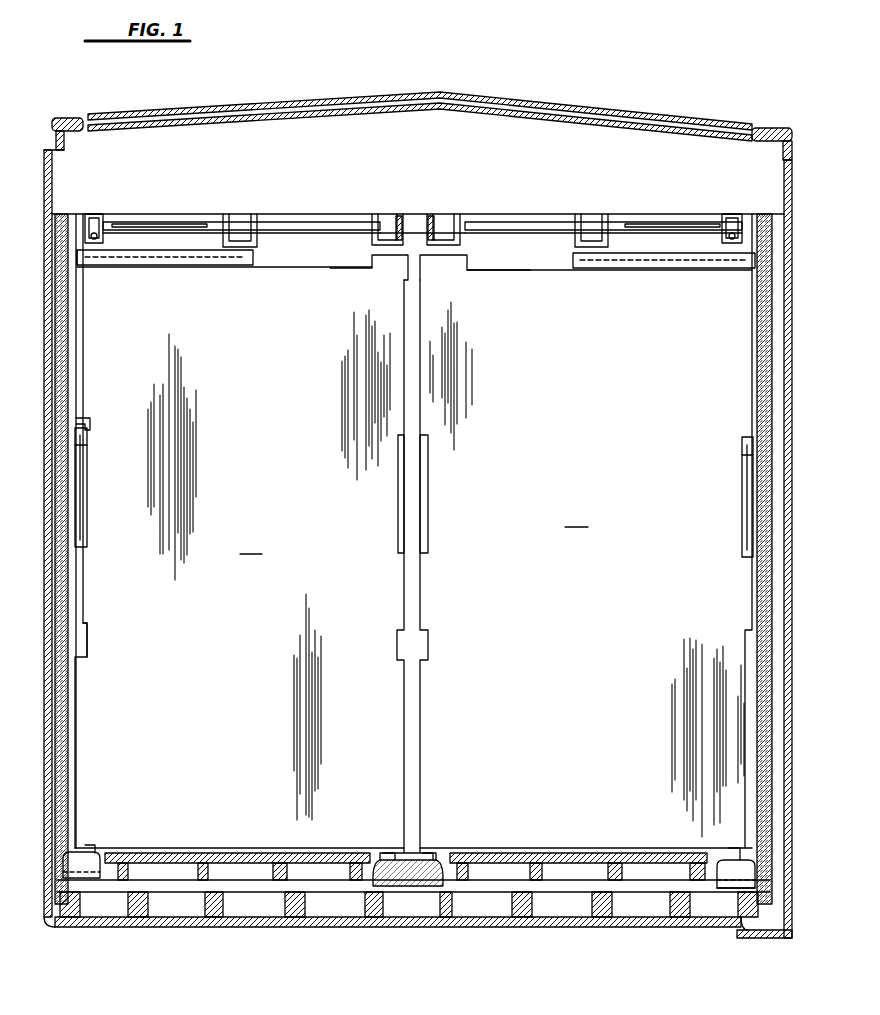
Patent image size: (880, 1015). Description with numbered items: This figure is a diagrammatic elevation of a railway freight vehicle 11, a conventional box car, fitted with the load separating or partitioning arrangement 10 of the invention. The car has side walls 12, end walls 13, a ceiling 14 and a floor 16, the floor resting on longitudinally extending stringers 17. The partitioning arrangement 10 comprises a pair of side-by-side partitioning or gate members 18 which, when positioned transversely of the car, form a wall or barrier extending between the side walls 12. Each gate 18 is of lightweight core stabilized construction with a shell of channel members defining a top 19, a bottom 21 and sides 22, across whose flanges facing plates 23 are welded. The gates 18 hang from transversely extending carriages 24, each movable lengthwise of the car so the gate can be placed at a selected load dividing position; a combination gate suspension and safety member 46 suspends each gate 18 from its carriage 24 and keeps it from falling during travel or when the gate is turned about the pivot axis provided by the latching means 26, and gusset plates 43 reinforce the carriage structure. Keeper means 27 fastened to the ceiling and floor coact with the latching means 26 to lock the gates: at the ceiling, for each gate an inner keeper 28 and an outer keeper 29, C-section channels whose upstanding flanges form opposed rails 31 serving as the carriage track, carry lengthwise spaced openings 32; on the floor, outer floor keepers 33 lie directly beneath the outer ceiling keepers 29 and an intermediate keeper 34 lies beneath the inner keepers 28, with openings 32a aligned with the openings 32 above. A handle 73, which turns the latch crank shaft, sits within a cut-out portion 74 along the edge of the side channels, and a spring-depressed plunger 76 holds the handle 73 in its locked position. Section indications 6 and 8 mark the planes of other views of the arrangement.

The section line 6- 6 is at (588, 192).
The section line 8- 8 is at (122, 185).
The load separating or partitioning arrangement 10 is at (375, 210).
The railway freight vehicle 11 is at (530, 99).
The side walls 12 is at (792, 165).
The end walls 13 is at (510, 243).
The ceiling 14 is at (205, 214).
The floor 16 is at (176, 885).
The longitudinally extending stringers 17 is at (295, 910).
The partitioning members 18 is at (414, 530).
The top 19 is at (292, 268).
The bottom 21 is at (268, 858).
The sides 22 is at (76, 667).
The facing plates 23 is at (85, 789).
The carriages 24 is at (258, 214).
The latching means 26 is at (78, 470).
The keeper means 27 is at (90, 214).
The inner keeper 28 is at (400, 215).
The outer keeper 29 is at (100, 214).
The rail 31 is at (100, 245).
The openings 32 is at (393, 258).
The openings 32a is at (92, 848).
The outer floor keepers 33 is at (737, 848).
The intermediate keeper 34 is at (437, 852).
The gusset plates 43 is at (372, 240).
The combination gate suspension and safety member 46 is at (190, 268).
The handle 73 is at (400, 520).
The cut-out portion 74 is at (83, 596).
The spring-depressed plunger 76 is at (92, 425).